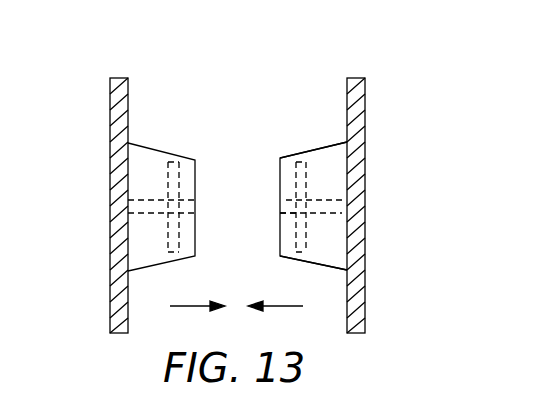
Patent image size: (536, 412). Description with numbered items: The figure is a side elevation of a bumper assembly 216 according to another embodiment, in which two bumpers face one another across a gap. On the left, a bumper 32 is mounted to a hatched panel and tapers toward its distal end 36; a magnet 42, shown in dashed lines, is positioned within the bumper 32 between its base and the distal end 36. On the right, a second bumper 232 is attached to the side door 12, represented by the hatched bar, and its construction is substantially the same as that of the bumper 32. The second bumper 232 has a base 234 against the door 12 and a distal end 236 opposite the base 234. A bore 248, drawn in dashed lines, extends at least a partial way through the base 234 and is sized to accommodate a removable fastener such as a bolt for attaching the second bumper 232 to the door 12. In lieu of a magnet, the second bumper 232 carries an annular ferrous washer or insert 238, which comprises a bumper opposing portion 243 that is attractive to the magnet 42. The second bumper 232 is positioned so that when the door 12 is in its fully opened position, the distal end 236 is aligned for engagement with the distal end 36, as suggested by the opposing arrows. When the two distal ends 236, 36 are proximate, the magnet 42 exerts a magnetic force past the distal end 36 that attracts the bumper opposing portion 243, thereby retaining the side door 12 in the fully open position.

The bumper assembly 216 is at (158, 62).
The side door 12 is at (360, 95).
The bumper 32 is at (151, 158).
The distal end 36 is at (186, 256).
The magnet 42 is at (176, 165).
The second bumper 232 is at (332, 157).
The distal end 236 is at (304, 152).
The annular ferrous washer or insert 238 is at (298, 183).
The bumper opposing portion 243 is at (297, 218).
The bore 248 is at (335, 205).
The base 234 is at (335, 252).